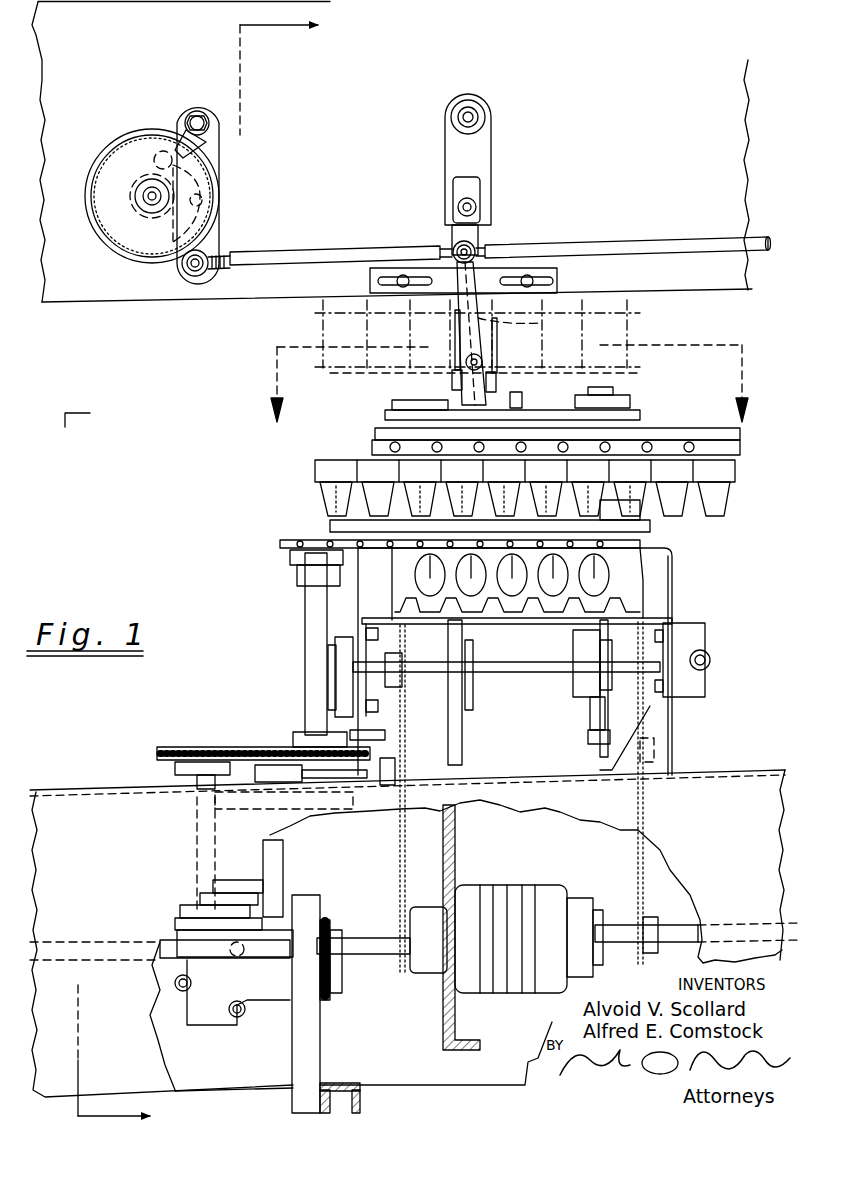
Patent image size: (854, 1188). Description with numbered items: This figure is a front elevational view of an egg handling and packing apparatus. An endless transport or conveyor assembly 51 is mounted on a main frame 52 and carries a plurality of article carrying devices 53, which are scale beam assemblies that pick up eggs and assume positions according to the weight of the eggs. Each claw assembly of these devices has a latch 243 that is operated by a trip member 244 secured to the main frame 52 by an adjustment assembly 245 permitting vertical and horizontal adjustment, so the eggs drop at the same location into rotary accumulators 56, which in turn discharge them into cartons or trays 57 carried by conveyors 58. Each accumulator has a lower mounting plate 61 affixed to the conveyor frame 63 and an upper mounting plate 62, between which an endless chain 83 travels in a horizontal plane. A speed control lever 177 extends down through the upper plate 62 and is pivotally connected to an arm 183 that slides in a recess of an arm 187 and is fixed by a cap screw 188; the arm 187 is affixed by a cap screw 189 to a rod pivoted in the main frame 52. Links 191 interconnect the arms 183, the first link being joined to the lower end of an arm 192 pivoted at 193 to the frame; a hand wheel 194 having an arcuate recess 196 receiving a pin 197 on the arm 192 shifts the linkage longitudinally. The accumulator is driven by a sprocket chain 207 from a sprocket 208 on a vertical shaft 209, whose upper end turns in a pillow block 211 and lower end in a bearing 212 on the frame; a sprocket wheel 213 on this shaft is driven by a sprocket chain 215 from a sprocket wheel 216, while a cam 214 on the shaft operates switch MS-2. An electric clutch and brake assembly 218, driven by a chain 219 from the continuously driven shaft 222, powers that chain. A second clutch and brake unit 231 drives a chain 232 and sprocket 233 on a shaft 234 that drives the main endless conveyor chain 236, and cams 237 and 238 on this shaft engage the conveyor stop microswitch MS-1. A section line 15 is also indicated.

The section line 15- 15 is at (211, 571).
The endless transport or conveyor assembly 51 is at (375, 383).
The main frame 52 is at (636, 135).
The article carrying devices 53 is at (458, 378).
The rotary accumulators 56 is at (652, 426).
The cartons or trays 57 is at (650, 576).
The conveyors 58 is at (492, 626).
The lower mounting plate 61 is at (420, 552).
The upper mounting plate 62 is at (385, 420).
The conveyor frame 63 is at (678, 712).
The endless chain 83 is at (378, 440).
The speed control lever 177 is at (486, 402).
The arm 183 is at (471, 237).
The arm 187 is at (472, 148).
The cap screw 188 is at (468, 206).
The cap screw 189 is at (469, 116).
The links 191 is at (330, 258).
The arm 192 is at (212, 155).
The pivot 193 is at (200, 120).
The hand wheel 194 is at (133, 256).
The arcuate recess 196 is at (155, 150).
The pin 197 is at (203, 205).
The sprocket chain 207 is at (328, 532).
The sprocket 208 is at (290, 556).
The vertical shaft 209 is at (316, 630).
The pillow block 211 is at (297, 575).
The bearing 212 is at (346, 812).
The sprocket wheel 213 is at (305, 737).
The cam 214 is at (370, 778).
The sprocket chain 215 is at (236, 744).
The sprocket wheel 216 is at (176, 770).
The electric clutch and brake assembly 218 is at (262, 1008).
The chain 219 is at (330, 922).
The shaft 222 is at (376, 950).
The clutch and brake unit 231 is at (505, 882).
The chain 232 is at (405, 862).
The sprocket 233 is at (385, 672).
The shaft 234 is at (680, 627).
The main endless conveyor chain 236 is at (464, 716).
The cam 237 is at (588, 674).
The cam 238 is at (596, 704).
The latch 243 is at (462, 318).
The trip member 244 is at (525, 323).
The adjustment assembly 245 is at (562, 276).
The microswitch MS-1 is at (575, 691).
The switch MS-2 is at (291, 791).